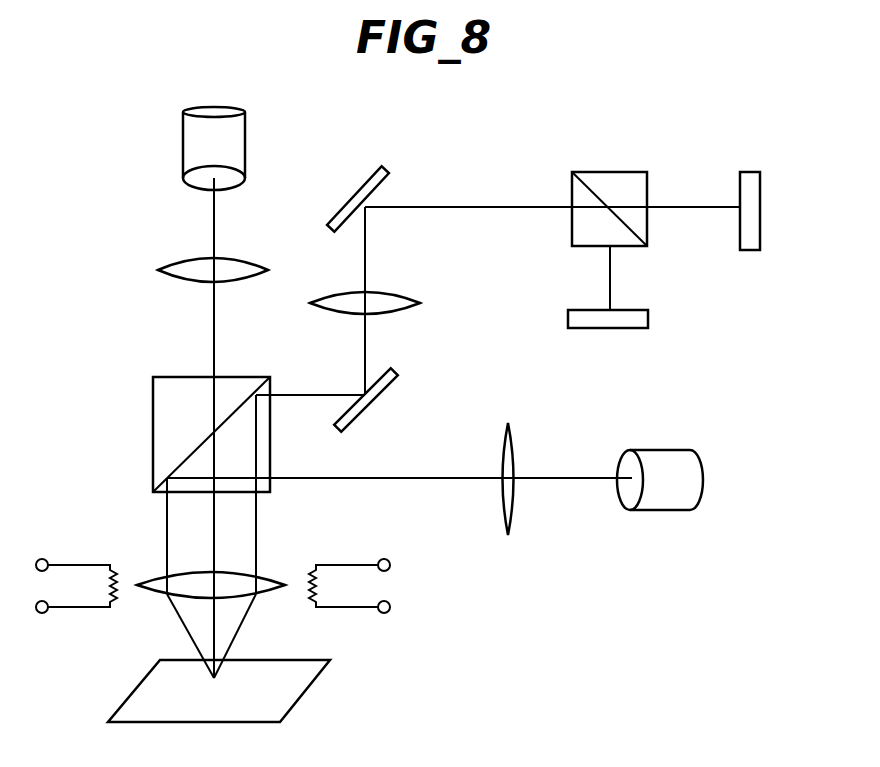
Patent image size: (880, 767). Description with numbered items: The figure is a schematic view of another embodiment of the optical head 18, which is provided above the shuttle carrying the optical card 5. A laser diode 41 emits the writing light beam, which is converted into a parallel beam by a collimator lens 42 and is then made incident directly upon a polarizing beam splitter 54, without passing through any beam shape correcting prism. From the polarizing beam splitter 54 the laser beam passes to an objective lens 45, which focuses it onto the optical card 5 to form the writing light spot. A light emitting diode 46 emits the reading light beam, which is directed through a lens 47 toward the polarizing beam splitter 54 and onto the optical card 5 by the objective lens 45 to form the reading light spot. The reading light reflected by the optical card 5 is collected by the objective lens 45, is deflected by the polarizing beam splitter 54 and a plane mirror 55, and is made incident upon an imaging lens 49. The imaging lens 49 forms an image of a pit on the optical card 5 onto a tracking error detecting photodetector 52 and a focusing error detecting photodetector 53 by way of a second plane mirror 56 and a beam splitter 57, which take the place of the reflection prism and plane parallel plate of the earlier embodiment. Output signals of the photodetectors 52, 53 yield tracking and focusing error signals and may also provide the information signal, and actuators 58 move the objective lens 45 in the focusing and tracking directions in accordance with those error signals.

The optical head 18 is at (478, 157).
The laser diode 41 is at (183, 130).
The collimator lens 42 is at (180, 260).
The objective lens 45 is at (283, 580).
The light emitting diode 46 is at (692, 452).
The condenser lens 47 is at (516, 455).
The imaging lens 49 is at (410, 303).
The tracking error detecting photodetector 52 is at (760, 192).
The focusing error detecting photodetector 53 is at (648, 320).
The polarizing beam splitter 54 is at (153, 397).
The plane mirror 55 is at (393, 383).
The plane mirror 56 is at (360, 188).
The beam splitter 57 is at (645, 172).
The actuators 58 is at (80, 612).
The optical card 5 is at (305, 690).